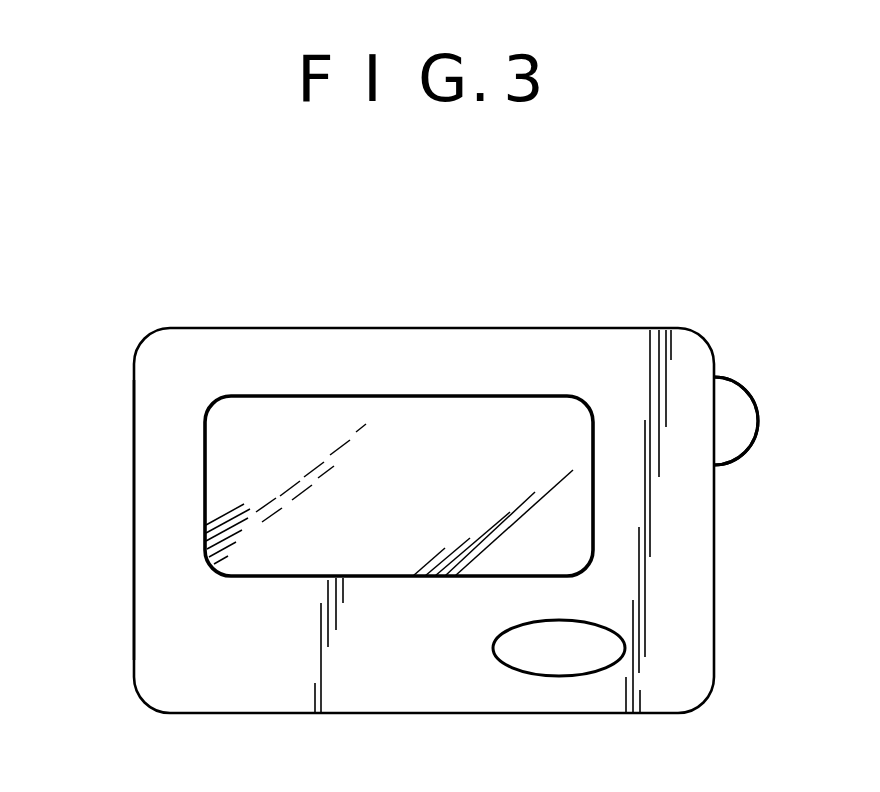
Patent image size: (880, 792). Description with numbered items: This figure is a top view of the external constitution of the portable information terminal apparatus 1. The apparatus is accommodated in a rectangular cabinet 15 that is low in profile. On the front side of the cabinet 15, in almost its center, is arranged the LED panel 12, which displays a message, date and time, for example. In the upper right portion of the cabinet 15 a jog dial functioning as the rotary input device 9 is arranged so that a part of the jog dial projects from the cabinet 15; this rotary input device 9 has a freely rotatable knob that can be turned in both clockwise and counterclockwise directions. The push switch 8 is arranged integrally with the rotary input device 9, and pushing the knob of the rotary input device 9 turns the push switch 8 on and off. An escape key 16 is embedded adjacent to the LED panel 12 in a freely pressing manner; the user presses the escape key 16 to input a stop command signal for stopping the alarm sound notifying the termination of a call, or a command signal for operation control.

The portable information terminal apparatus 1 is at (203, 292).
The push switch 8 is at (736, 460).
The rotary input device 9 is at (740, 380).
The LED panel 12 is at (446, 427).
The cabinet 15 is at (134, 637).
The escape key 16 is at (533, 662).